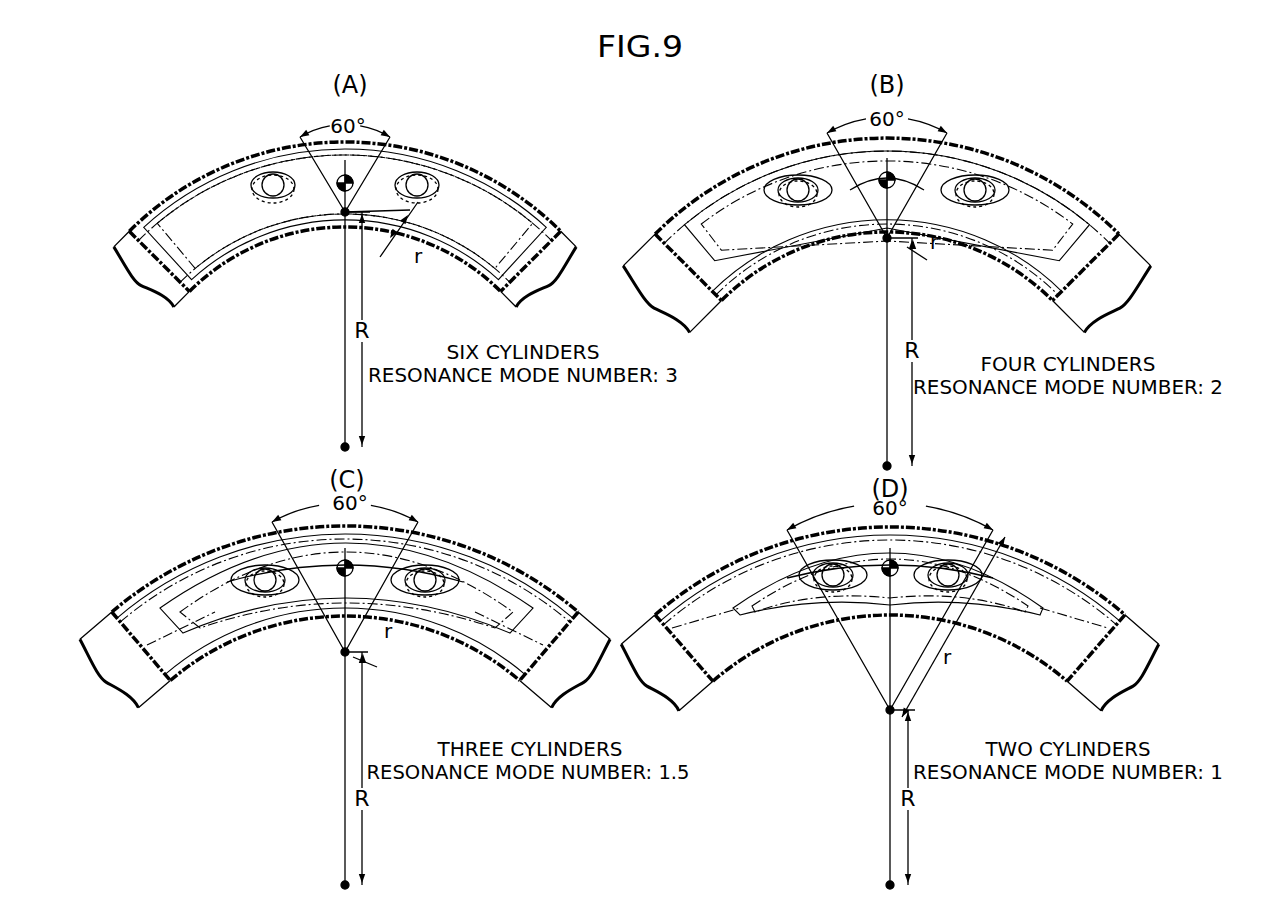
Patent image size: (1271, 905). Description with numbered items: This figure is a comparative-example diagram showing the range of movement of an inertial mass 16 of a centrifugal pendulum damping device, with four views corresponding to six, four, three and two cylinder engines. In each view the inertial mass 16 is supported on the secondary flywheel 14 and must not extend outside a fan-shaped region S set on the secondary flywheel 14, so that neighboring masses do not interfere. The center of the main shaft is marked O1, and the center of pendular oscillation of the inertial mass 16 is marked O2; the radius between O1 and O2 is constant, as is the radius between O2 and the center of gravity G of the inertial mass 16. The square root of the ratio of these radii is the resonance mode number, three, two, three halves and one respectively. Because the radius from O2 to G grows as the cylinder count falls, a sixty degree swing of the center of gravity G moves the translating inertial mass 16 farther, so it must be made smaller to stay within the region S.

The secondary flywheel 14 is at (548, 245).
The inertial mass 16 is at (195, 190).
The fan-shaped region S is at (232, 160).
The center of gravity G is at (349, 180).
The center of main shaft O1 is at (602, 666).
The center of pendular oscillation O2 is at (600, 461).